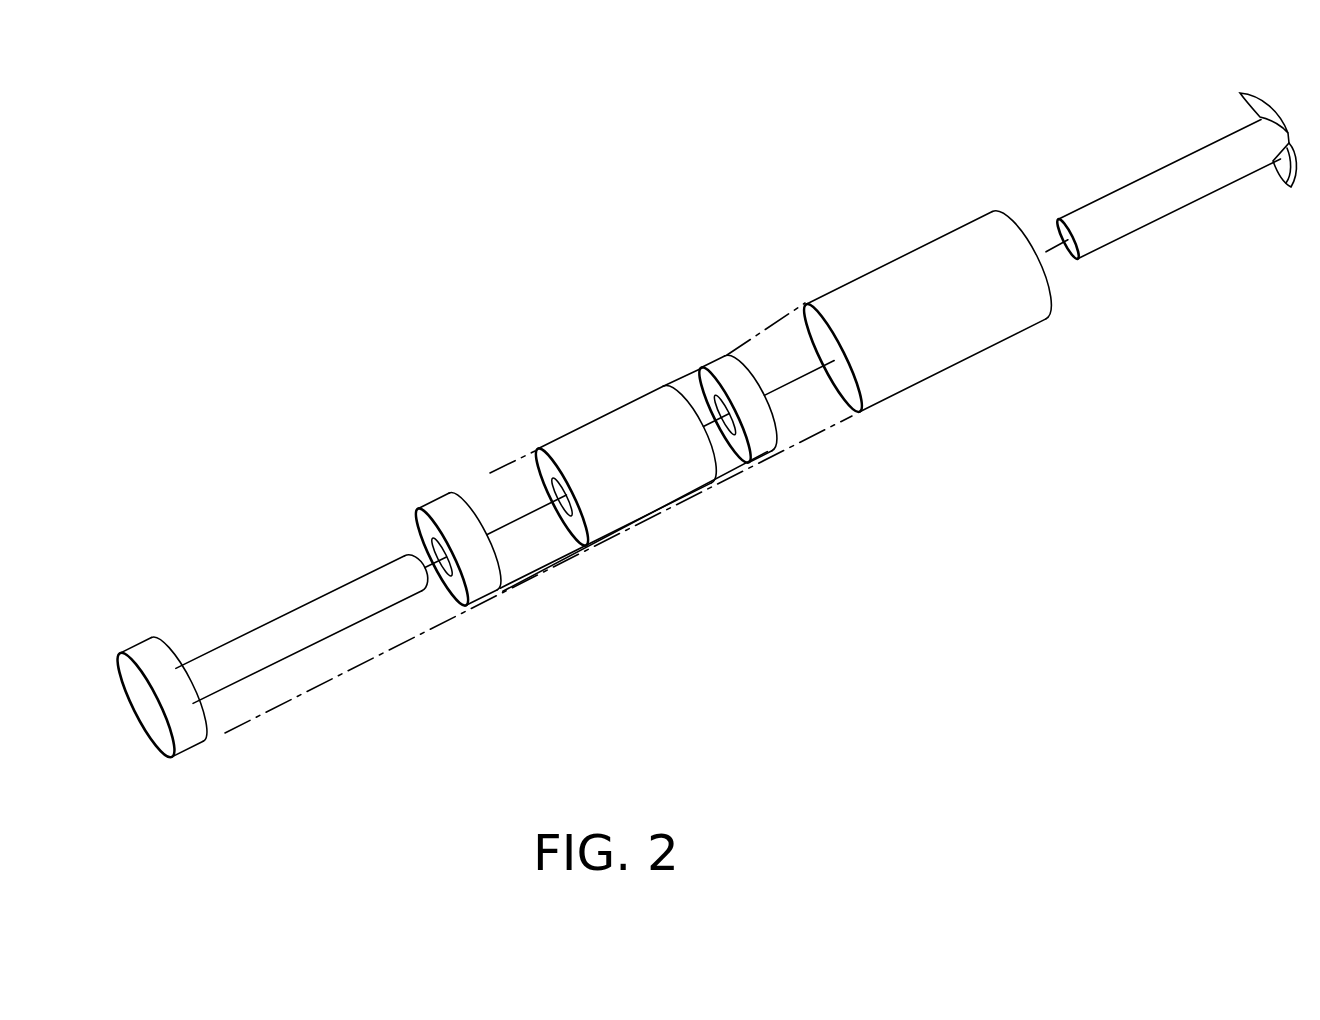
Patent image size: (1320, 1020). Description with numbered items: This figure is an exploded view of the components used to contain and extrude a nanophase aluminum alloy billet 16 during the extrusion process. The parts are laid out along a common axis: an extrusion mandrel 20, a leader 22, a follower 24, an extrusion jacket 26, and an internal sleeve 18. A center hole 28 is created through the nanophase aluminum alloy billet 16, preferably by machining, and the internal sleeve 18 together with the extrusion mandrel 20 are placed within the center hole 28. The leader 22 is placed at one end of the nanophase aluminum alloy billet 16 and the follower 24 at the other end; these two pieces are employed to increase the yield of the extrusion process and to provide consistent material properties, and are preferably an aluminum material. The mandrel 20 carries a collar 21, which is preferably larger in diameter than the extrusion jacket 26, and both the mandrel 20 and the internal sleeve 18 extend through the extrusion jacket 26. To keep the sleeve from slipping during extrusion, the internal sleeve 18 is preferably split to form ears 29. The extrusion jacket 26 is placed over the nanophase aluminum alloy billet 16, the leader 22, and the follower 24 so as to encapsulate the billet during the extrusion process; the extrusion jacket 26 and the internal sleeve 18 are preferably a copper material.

The nanophase aluminum alloy billet 16 is at (655, 503).
The internal sleeve 18 is at (1108, 247).
The extrusion mandrel 20 is at (298, 650).
The collar 21 is at (190, 748).
The leader 22 is at (760, 445).
The follower 24 is at (483, 592).
The extrusion jacket 26 is at (962, 363).
The center hole 28 is at (553, 500).
The ears 29 is at (1262, 95).